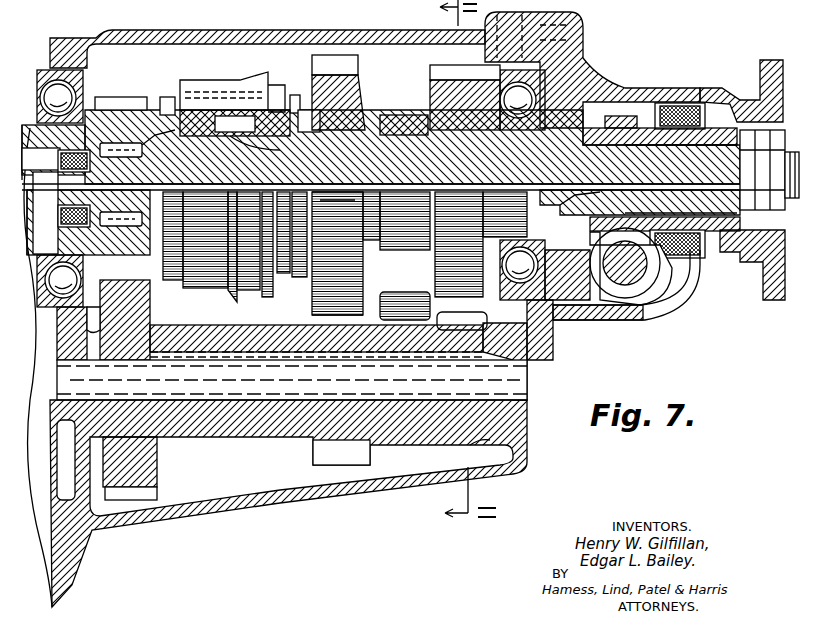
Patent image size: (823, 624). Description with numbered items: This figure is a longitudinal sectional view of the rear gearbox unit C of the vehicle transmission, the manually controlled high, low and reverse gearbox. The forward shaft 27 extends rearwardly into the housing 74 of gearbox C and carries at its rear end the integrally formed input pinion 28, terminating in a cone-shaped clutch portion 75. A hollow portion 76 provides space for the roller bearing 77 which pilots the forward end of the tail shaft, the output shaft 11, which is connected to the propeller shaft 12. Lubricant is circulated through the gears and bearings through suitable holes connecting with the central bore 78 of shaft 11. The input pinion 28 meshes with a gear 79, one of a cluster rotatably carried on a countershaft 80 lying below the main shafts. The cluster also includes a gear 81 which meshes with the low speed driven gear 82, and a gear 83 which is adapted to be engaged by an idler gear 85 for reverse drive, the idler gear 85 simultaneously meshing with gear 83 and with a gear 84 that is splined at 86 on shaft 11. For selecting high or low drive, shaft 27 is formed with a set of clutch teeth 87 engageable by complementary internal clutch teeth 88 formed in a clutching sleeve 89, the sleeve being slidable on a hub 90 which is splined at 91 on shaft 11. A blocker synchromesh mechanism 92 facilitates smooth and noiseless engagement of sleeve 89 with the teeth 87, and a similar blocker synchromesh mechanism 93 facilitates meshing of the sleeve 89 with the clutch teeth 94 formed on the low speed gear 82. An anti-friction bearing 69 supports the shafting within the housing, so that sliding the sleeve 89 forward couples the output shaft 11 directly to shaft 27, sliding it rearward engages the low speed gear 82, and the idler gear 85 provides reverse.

The rear gearbox unit C is at (162, 30).
The output shaft 11 is at (722, 140).
The propeller shaft 12 is at (443, 263).
The shaft 27 is at (53, 150).
The input pinion 28 is at (124, 100).
The needle bearing 69 is at (60, 270).
The housing 74 is at (206, 530).
The cone-shaped clutch portion 75 is at (215, 150).
The hollow portion 76 is at (42, 186).
The roller bearing 77 is at (130, 226).
The central bore 78 is at (570, 207).
The gear 79 is at (150, 470).
The countershaft 80 is at (196, 392).
The gear 81 is at (312, 452).
The low speed driven gear 82 is at (352, 86).
The gear 83 is at (448, 440).
The gear 84 is at (446, 255).
The idler gear 85 is at (405, 300).
The spline 86 is at (482, 130).
The clutch teeth 87 is at (166, 98).
The internal clutch teeth 88 is at (196, 100).
The clutching sleeve 89 is at (246, 92).
The hub 90 is at (235, 123).
The spline 91 is at (250, 142).
The blocker synchromesh mechanism 92 is at (137, 137).
The blocker synchromesh mechanism 93 is at (310, 122).
The clutch teeth 94 is at (295, 96).